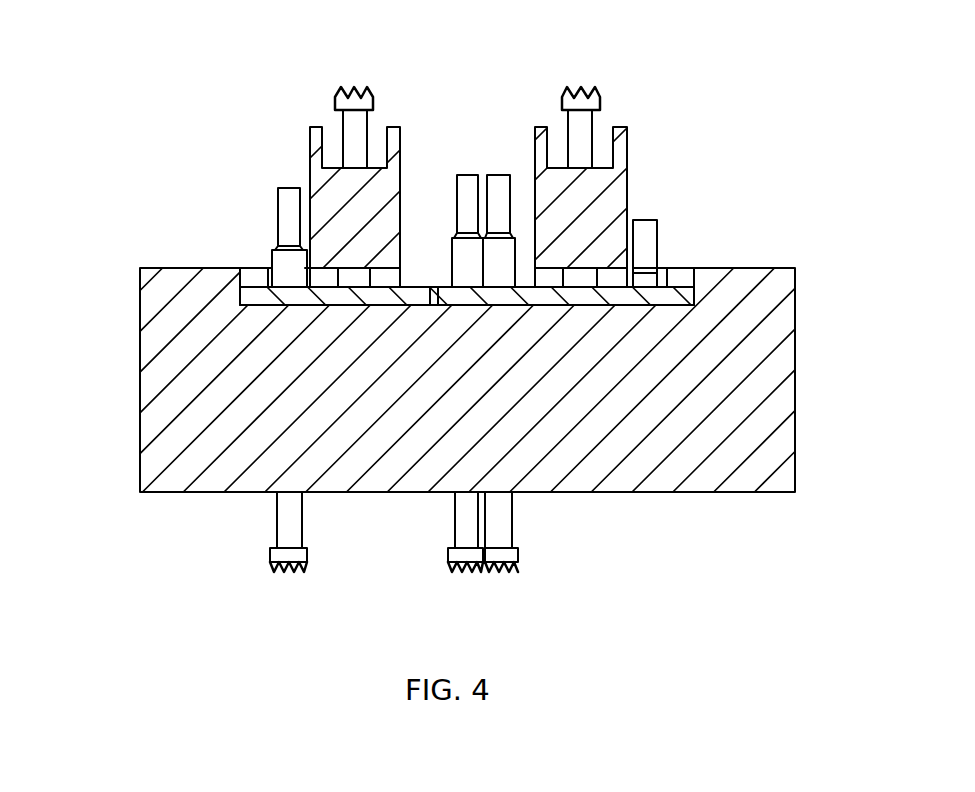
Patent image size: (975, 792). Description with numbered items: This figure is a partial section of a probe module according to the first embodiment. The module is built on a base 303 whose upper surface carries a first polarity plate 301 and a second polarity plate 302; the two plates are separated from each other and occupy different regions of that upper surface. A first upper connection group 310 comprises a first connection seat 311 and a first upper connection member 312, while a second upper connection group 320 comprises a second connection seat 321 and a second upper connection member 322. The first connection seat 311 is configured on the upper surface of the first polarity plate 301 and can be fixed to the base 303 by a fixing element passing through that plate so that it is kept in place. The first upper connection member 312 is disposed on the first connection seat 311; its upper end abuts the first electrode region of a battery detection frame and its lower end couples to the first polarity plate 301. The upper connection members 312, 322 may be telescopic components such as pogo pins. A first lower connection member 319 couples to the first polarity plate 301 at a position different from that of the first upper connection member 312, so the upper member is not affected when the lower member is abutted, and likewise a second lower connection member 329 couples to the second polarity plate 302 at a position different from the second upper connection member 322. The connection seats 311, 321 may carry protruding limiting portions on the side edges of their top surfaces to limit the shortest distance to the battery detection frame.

The first polarity plate 301 is at (674, 292).
The second polarity plate 302 is at (260, 290).
The base 303 is at (778, 437).
The first upper connection group 310 is at (723, 163).
The first connection seat 311 is at (610, 200).
The first upper connection member 312 is at (578, 92).
The first lower connection member 319 is at (480, 130).
The second upper connection group 320 is at (214, 166).
The second connection seat 321 is at (328, 200).
The second upper connection member 322 is at (350, 90).
The second lower connection member 329 is at (250, 218).